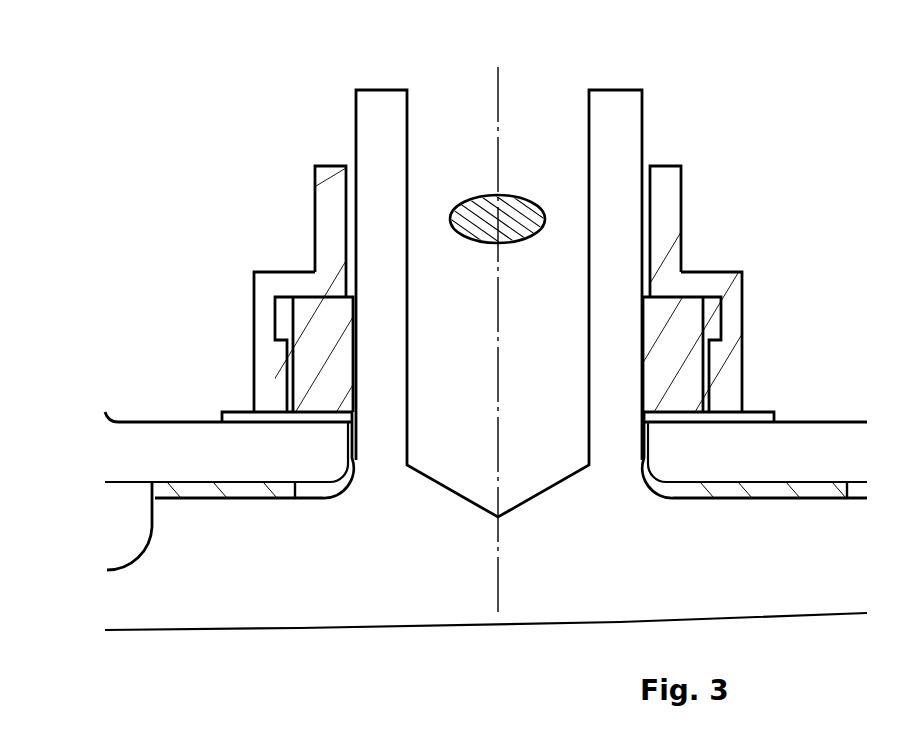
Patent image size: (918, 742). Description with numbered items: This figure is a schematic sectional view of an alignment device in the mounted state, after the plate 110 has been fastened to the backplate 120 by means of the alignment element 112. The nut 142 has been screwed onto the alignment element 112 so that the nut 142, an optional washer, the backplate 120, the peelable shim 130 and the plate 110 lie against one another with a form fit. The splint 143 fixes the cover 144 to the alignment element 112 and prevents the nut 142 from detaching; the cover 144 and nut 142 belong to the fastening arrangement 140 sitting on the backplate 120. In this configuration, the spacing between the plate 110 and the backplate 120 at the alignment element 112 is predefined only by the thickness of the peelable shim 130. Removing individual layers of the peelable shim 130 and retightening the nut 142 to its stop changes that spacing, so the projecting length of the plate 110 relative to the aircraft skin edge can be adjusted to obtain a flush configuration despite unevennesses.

The plate 110 is at (222, 586).
The alignment element 112 is at (384, 278).
The backplate 120 is at (170, 422).
The peelable shim 130 is at (728, 495).
The bracket 140 is at (715, 232).
The nut 142 is at (314, 393).
The splint 143 is at (535, 223).
The cover 144 is at (662, 234).